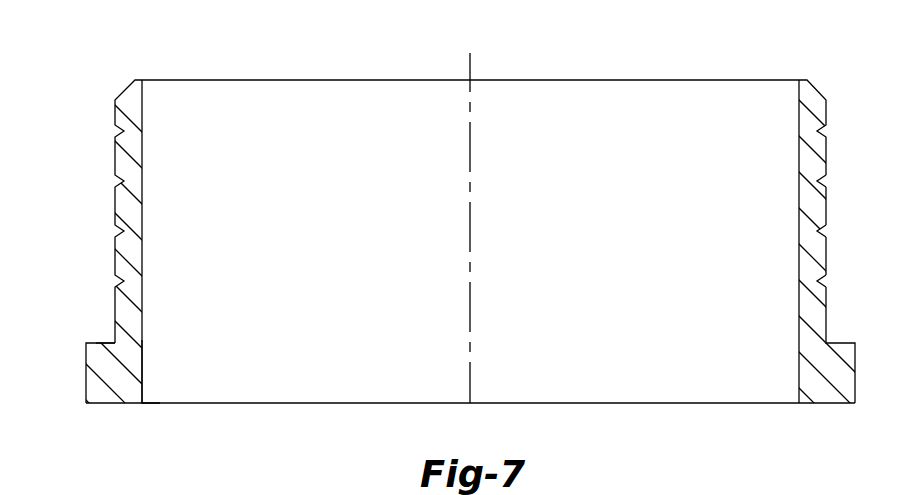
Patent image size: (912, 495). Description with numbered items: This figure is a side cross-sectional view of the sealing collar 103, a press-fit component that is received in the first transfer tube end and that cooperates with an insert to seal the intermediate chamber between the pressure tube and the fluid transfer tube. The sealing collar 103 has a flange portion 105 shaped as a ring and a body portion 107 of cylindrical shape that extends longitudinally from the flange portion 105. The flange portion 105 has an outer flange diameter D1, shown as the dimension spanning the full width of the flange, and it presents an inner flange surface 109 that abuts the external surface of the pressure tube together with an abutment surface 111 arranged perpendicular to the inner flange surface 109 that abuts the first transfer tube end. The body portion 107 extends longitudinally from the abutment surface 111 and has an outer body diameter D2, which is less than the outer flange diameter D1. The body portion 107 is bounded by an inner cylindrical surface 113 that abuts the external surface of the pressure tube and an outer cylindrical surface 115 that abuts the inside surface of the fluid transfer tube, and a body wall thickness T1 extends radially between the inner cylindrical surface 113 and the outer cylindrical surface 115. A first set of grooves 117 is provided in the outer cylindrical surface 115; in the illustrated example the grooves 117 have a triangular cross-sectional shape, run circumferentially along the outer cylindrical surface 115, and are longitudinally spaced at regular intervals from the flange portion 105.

The sealing collar 103 is at (456, 235).
The flange portion 105 is at (86, 385).
The body portion 107 is at (133, 202).
The inner flange surface 109 is at (143, 357).
The abutment surface 111 is at (97, 342).
The inner cylindrical surface 113 is at (143, 175).
The outer cylindrical surface 115 is at (827, 152).
The first set of grooves 117 is at (819, 182).
The body wall thickness T1 is at (195, 113).
The outer flange diameter D1 is at (855, 424).
The outer body diameter D2 is at (826, 53).